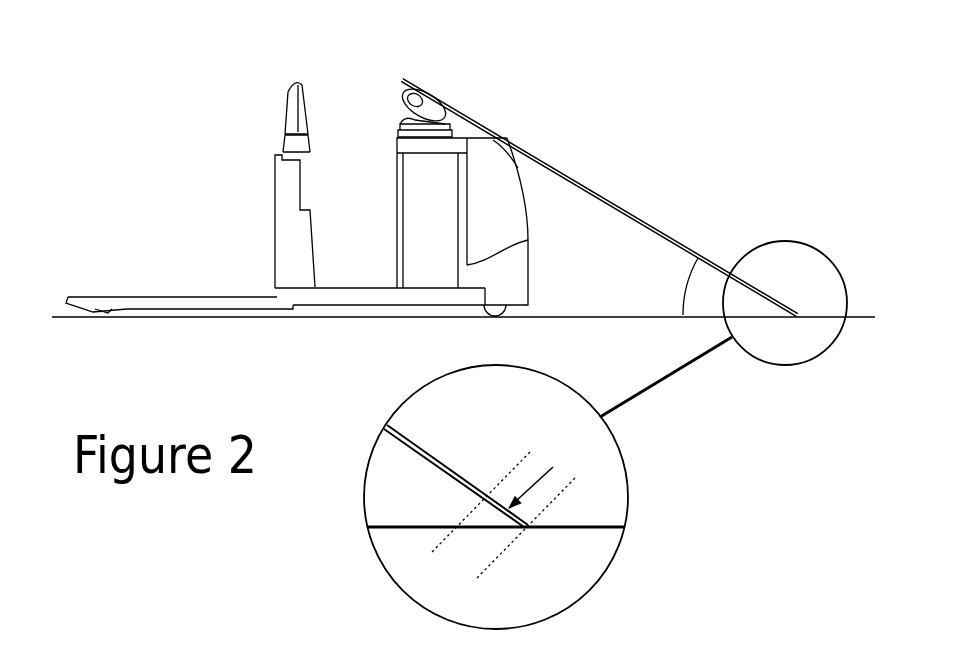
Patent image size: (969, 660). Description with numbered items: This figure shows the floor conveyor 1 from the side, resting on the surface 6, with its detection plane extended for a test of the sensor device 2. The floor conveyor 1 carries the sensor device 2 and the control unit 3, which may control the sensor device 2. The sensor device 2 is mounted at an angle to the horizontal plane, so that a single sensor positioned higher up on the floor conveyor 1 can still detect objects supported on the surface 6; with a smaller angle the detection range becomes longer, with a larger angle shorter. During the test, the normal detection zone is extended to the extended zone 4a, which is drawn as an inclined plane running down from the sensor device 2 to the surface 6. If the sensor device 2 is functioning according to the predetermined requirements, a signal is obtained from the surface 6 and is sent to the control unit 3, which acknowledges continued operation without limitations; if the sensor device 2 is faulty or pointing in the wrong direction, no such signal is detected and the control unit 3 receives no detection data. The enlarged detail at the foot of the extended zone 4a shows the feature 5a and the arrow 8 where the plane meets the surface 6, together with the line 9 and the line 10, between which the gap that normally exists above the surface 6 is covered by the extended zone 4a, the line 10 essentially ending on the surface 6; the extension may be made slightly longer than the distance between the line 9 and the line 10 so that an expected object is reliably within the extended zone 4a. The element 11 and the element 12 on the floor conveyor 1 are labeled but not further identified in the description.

The floor conveyor 1 is at (132, 128).
The sensor device 2 is at (514, 140).
The control unit 3 is at (424, 94).
The extended zone 4a is at (588, 188).
The guide rail contact surface 5a is at (483, 490).
The surface 6 is at (577, 315).
The force direction arrow 8 is at (541, 472).
The line 9 is at (472, 513).
The line 10 is at (523, 538).
The lift mast 11 is at (403, 103).
The load forks 12 is at (96, 298).